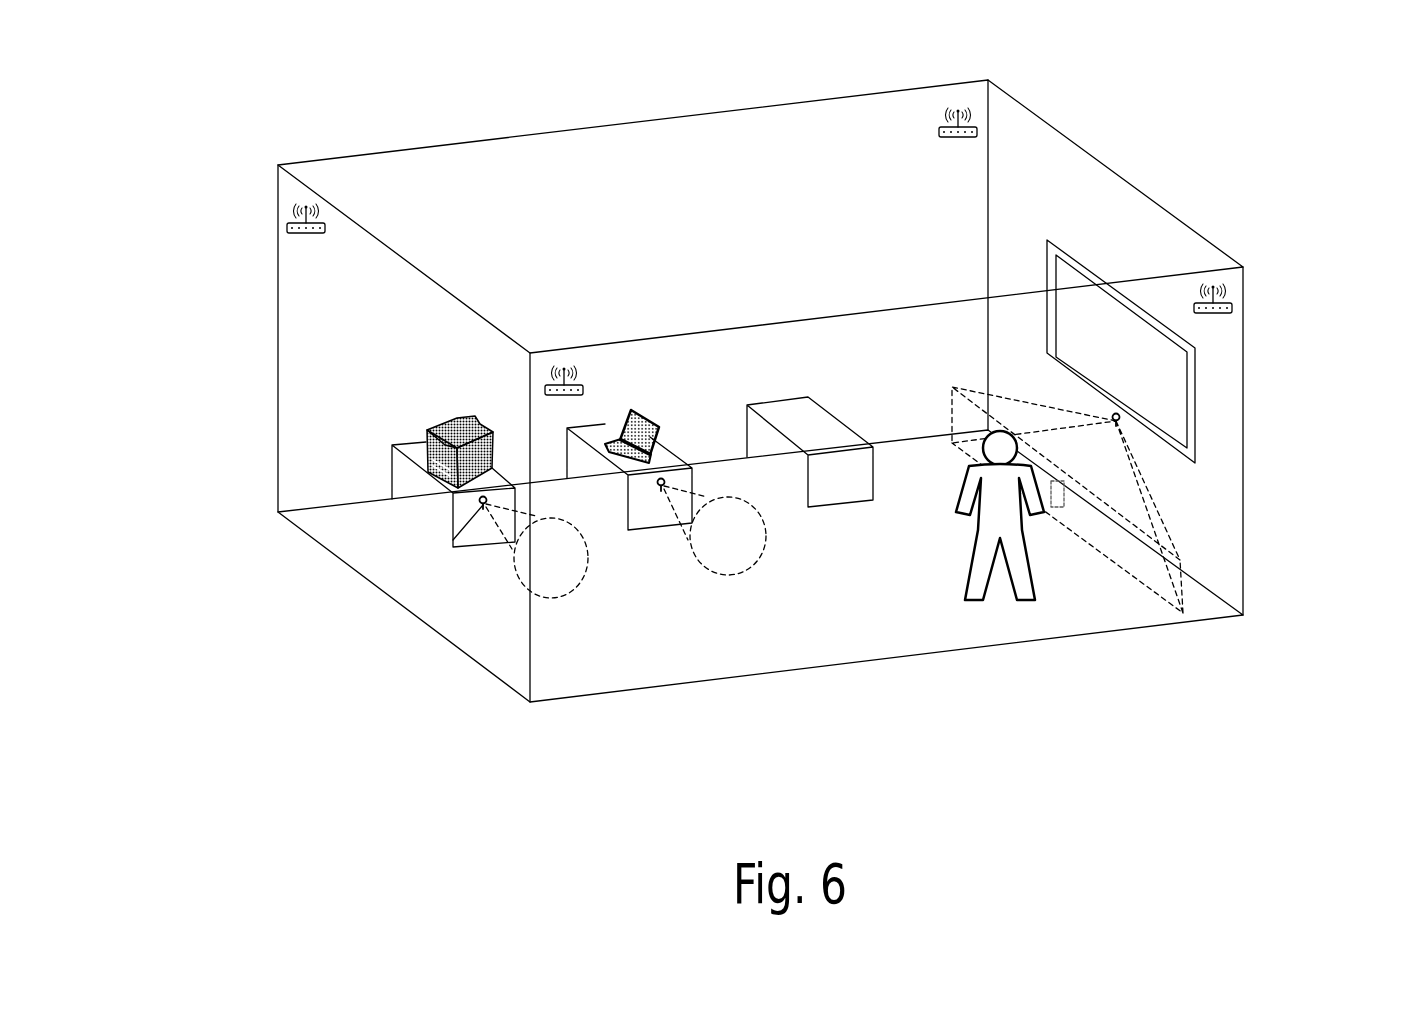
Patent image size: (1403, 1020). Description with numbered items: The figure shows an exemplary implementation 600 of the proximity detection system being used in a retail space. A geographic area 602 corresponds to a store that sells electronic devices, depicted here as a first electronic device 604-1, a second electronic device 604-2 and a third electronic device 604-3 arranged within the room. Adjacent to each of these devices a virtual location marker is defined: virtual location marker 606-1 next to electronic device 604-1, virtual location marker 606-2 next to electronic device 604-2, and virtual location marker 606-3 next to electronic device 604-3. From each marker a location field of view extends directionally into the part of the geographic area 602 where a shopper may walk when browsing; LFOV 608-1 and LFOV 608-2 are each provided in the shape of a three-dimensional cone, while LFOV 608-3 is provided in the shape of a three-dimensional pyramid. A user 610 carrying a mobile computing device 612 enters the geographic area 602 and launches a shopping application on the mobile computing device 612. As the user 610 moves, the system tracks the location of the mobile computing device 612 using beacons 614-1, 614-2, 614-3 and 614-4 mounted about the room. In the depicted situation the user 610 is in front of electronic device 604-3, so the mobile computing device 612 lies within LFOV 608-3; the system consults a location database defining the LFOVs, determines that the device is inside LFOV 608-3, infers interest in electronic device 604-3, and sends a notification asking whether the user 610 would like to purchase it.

The exemplary implementation 600 is at (221, 104).
The geographic area 602 is at (278, 428).
The electronic device 604-1 is at (439, 422).
The electronic device 604-2 is at (656, 418).
The electronic device 604-3 is at (1063, 366).
The virtual location marker 606-1 is at (453, 548).
The virtual location marker 606-2 is at (661, 491).
The virtual location marker 606-3 is at (1120, 417).
The LFOV 608-1 is at (515, 576).
The LFOV 608-2 is at (728, 576).
The LFOV 608-3 is at (1157, 511).
The user 610 is at (965, 516).
The mobile computing device 612 is at (1065, 509).
The beacon 614-1 is at (323, 234).
The beacon 614-2 is at (946, 140).
The beacon 614-3 is at (574, 380).
The beacon 614-4 is at (1236, 308).